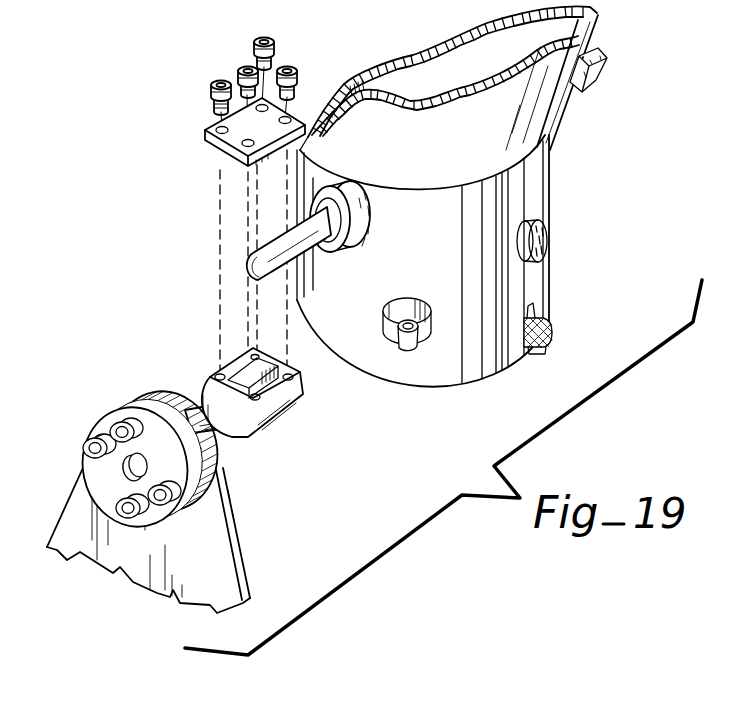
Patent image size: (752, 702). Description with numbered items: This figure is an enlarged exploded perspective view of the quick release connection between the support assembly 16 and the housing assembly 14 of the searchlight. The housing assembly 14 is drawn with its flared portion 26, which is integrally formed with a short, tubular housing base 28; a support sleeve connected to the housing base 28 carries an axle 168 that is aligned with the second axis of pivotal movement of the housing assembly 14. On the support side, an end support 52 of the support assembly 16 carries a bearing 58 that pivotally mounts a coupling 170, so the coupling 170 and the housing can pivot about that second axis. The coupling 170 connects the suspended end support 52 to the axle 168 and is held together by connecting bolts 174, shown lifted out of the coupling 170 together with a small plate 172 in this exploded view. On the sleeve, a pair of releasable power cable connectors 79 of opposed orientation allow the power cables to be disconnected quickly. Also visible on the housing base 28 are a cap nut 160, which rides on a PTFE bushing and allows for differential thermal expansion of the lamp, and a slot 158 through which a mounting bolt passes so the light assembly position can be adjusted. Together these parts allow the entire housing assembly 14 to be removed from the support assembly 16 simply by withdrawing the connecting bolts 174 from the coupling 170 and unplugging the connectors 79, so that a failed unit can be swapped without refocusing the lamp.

The housing assembly 14 is at (676, 187).
The support assembly 16 is at (66, 423).
The flared portion 26 is at (592, 33).
The housing base 28 is at (527, 202).
The end support 52 is at (232, 534).
The bearing 58 is at (136, 412).
The releasable power cable connector 79 is at (424, 336).
The slot 158 is at (530, 348).
The cap nut 160 is at (558, 327).
The axle 168 is at (338, 263).
The coupling 170 is at (282, 418).
The mounting plate 172 is at (208, 133).
The connecting bolt 174 is at (258, 45).